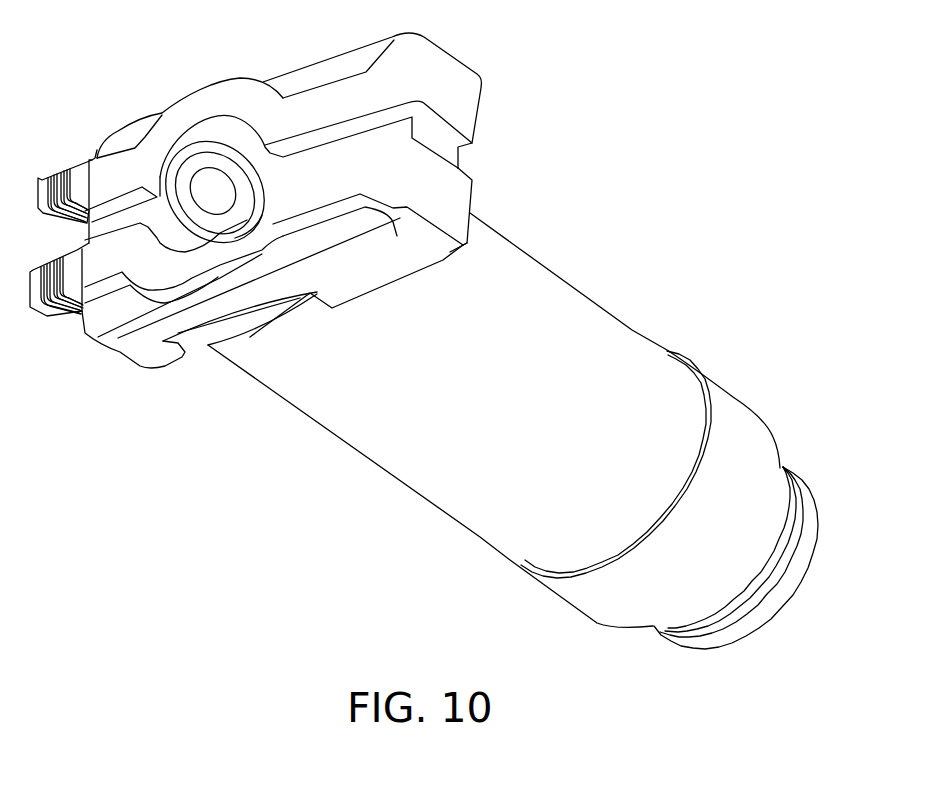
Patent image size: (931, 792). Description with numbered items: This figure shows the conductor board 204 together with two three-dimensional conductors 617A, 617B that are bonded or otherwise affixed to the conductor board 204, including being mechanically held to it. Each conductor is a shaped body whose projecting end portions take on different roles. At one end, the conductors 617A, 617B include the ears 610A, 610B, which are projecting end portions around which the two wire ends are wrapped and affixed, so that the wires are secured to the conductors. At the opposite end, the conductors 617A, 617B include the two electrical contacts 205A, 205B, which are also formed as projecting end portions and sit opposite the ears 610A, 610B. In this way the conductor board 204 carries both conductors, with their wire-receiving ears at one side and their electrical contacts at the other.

The conductor board 204 is at (118, 352).
The electrical contact 205A is at (473, 97).
The electrical contact 205B is at (465, 200).
The ear 610A is at (64, 154).
The ear 610B is at (42, 343).
The conductor 617A is at (335, 90).
The conductor 617B is at (312, 202).